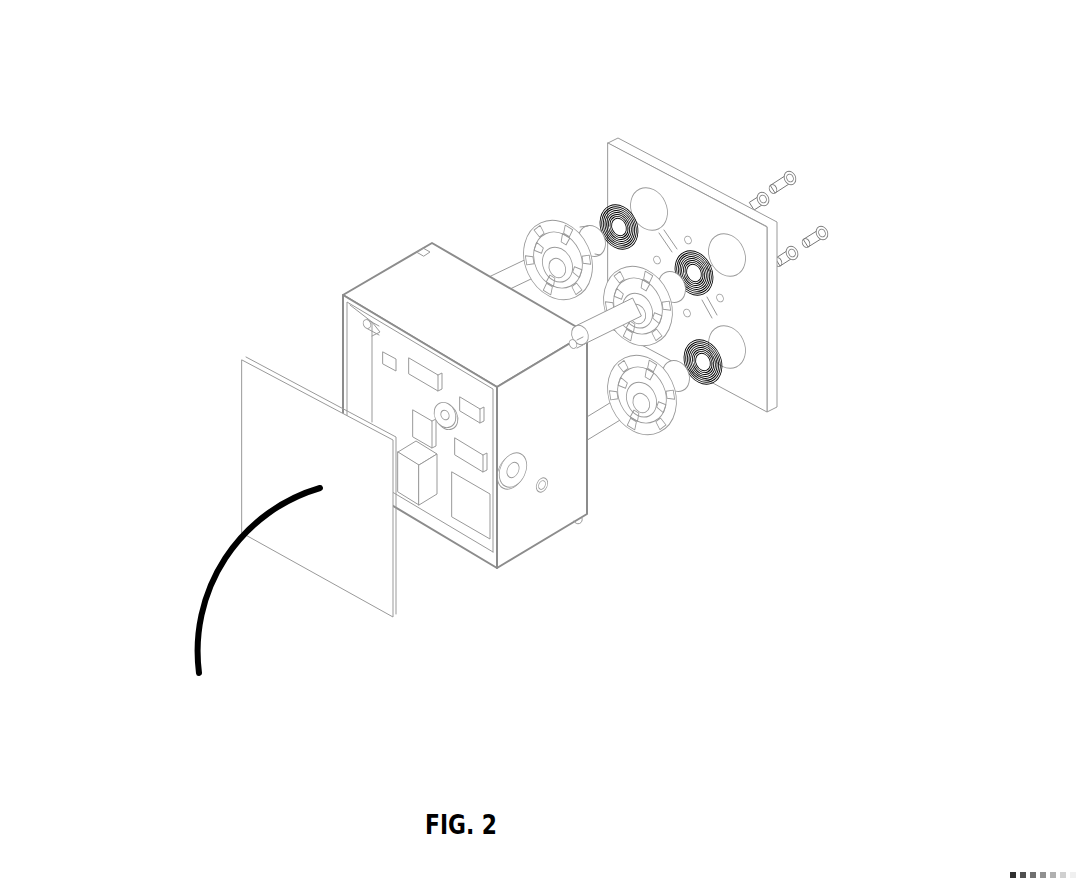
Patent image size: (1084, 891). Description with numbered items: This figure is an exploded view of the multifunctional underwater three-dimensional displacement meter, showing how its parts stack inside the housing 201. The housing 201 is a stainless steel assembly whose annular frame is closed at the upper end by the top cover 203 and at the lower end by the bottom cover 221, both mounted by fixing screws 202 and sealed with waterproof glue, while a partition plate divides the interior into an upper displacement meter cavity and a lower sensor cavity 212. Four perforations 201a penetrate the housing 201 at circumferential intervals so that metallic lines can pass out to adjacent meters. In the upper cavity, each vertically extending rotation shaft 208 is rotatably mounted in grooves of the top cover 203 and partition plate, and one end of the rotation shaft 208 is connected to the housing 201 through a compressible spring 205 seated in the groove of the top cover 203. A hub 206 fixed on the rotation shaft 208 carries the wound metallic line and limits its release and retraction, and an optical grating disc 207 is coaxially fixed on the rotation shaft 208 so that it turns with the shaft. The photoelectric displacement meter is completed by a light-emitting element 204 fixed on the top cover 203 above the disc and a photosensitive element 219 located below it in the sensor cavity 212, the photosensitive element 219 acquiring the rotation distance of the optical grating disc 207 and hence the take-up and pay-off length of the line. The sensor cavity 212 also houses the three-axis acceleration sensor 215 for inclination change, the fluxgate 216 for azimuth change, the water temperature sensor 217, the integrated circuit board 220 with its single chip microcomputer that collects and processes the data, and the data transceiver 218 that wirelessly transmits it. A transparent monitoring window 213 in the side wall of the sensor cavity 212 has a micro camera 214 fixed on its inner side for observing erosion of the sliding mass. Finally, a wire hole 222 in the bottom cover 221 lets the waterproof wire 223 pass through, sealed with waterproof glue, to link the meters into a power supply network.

The housing 201 is at (407, 288).
The perforation 201a is at (420, 248).
The fixing screw 202 is at (729, 136).
The top cover 203 is at (608, 140).
The light-emitting element 204 is at (708, 292).
The compressible spring 205 is at (718, 387).
The hub 206 is at (575, 222).
The optical grating disc 207 is at (531, 224).
The rotation shaft 208 is at (607, 430).
The sensor cavity 212 is at (442, 518).
The transparent monitoring window 213 is at (513, 475).
The micro camera 214 is at (547, 490).
The three-axis acceleration sensor 215 is at (475, 508).
The fluxgate 216 is at (460, 387).
The water temperature sensor 217 is at (372, 328).
The data transceiver 218 is at (365, 318).
The photosensitive element 219 is at (415, 428).
The integrated circuit board 220 is at (412, 485).
The bottom cover 221 is at (267, 428).
The wire hole 222 is at (436, 410).
The waterproof wire 223 is at (205, 590).